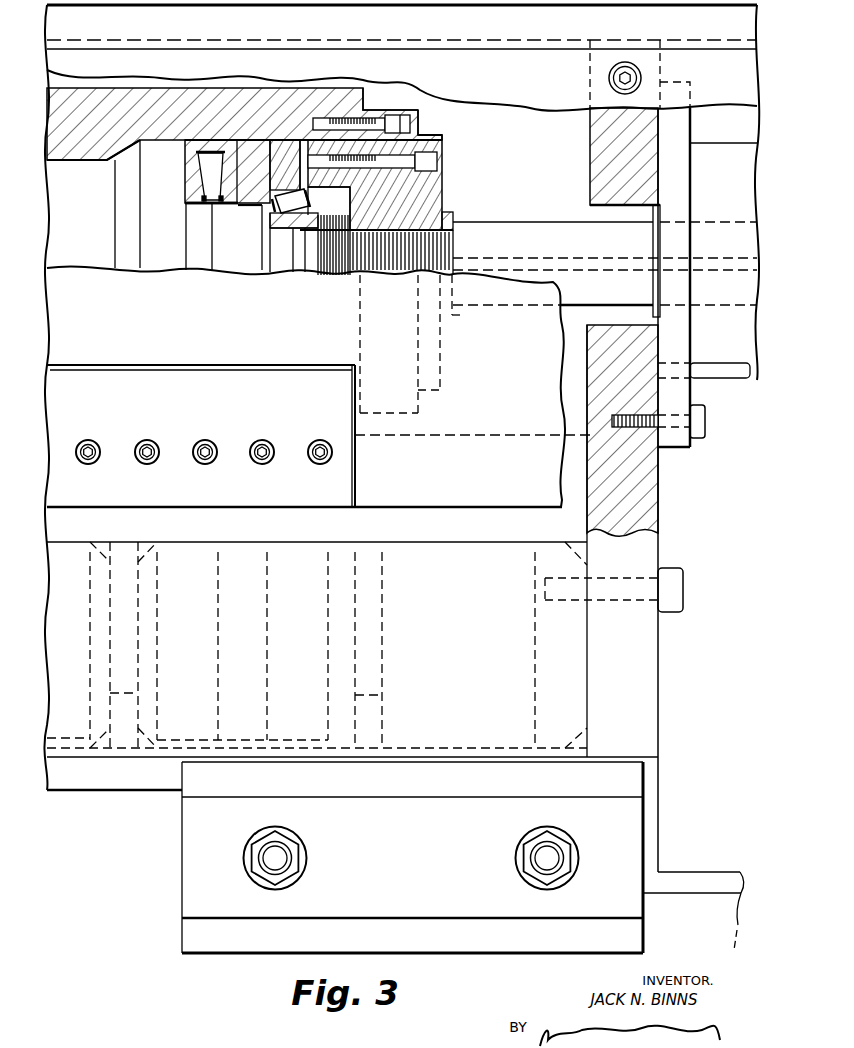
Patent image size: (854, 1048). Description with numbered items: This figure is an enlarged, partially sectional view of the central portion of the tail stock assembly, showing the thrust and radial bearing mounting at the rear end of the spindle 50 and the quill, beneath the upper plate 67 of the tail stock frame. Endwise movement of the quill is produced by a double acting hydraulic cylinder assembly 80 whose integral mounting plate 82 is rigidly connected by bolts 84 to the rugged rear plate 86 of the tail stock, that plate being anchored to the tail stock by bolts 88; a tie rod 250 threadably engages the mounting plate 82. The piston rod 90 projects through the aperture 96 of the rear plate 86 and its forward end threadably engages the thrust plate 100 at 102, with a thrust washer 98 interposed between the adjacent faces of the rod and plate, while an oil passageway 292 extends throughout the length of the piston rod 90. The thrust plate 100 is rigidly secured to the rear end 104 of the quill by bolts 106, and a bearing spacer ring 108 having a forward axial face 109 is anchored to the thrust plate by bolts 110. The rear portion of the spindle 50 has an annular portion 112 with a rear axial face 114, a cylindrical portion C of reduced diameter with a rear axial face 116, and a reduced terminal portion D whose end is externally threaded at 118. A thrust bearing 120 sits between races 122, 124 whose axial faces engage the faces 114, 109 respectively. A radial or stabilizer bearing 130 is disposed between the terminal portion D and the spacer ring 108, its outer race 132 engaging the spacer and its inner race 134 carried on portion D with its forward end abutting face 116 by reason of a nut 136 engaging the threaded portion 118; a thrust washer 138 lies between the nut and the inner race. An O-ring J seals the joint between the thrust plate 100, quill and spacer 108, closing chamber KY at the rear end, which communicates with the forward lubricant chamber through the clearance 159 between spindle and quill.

The upper plate 67 is at (350, 35).
The spindle 50 is at (88, 241).
The forward axial face 109 is at (253, 138).
The clearance 159 is at (107, 161).
The rear end 104 is at (368, 110).
The thrust plate 100 is at (390, 114).
The bolts 106 is at (398, 125).
The O-ring J is at (373, 124).
The chamber KY is at (418, 138).
The race 122 is at (197, 184).
The thrust bearing 120 is at (206, 163).
The race 124 is at (213, 208).
The bearing spacer ring 108 is at (272, 158).
The outer race 132 is at (297, 150).
The nut 136 is at (442, 186).
The bolts 110 is at (438, 160).
The thrust washer 98 is at (449, 212).
The thrust washer 138 is at (300, 217).
The annular portion 112 is at (161, 257).
The rear axial face 114 is at (187, 263).
The cylindrical portion C is at (242, 208).
The rear axial face 116 is at (262, 263).
The reduced terminal portion D is at (287, 227).
The radial bearing 130 is at (293, 270).
The inner race 134 is at (307, 268).
The threaded portion 118 is at (328, 270).
The threaded engagement 102 is at (437, 245).
The piston rod 90 is at (550, 224).
The aperture 96 is at (640, 213).
The oil passageway 292 is at (512, 263).
The hydraulic cylinder assembly 80 is at (740, 377).
The mounting plate 82 is at (676, 447).
The tie rod 250 is at (702, 380).
The bolts 84 is at (706, 419).
The rear plate 86 is at (650, 508).
The bolts 88 is at (684, 590).